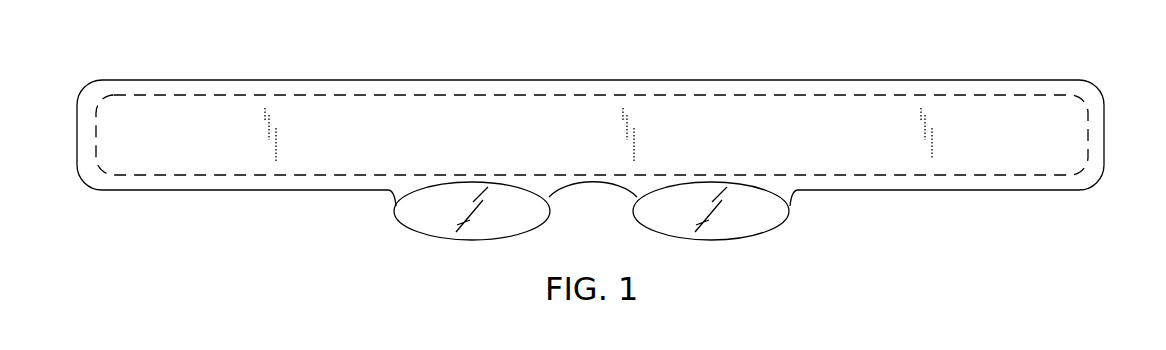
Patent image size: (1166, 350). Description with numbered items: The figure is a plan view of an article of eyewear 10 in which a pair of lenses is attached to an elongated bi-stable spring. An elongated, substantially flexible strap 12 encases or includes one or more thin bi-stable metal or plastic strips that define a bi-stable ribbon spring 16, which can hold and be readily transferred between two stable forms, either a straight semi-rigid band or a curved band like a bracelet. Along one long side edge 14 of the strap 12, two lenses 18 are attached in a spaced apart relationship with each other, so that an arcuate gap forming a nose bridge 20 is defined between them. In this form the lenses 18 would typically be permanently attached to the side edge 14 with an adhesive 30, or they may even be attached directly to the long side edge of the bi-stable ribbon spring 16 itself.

The article of eyewear 10 is at (615, 144).
The strap 12 is at (1093, 90).
The side edge 14 is at (978, 191).
The bi-stable ribbon spring 16 is at (148, 170).
The lenses 18 is at (421, 231).
The nose bridge 20 is at (619, 184).
The adhesive 30 is at (392, 195).